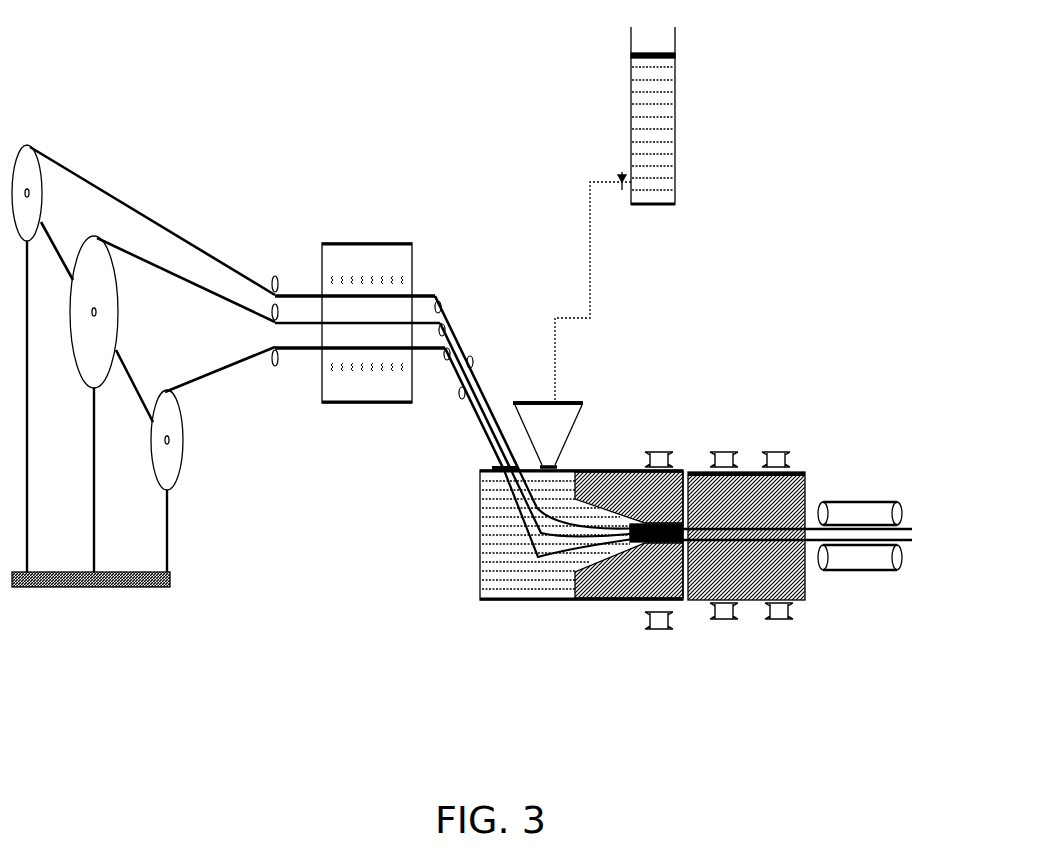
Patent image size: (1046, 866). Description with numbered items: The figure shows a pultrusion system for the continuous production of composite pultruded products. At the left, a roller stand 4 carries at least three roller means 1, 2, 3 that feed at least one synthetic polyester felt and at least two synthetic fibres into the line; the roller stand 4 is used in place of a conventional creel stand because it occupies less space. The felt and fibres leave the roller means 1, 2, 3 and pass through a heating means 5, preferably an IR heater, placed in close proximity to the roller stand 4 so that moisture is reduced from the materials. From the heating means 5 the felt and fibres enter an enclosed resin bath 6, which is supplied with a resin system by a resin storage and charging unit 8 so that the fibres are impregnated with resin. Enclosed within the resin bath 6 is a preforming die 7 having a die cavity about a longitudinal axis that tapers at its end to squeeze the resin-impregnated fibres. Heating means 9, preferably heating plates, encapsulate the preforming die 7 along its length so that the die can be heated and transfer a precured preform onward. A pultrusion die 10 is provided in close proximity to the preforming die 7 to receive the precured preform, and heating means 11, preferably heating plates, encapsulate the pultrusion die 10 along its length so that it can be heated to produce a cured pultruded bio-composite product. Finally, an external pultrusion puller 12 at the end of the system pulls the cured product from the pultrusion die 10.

The roller means 1 is at (31, 443).
The roller means 2 is at (97, 502).
The roller means 3 is at (169, 542).
The roller stand 4 is at (120, 588).
The heating means 5 is at (404, 242).
The enclosed resin bath 6 is at (570, 498).
The preforming die 7 is at (636, 526).
The resin storage and charging unit 8 is at (675, 135).
The heating means 9 is at (657, 451).
The pultrusion die 10 is at (702, 528).
The heating means 11 is at (730, 451).
The external pultrusion puller 12 is at (860, 497).